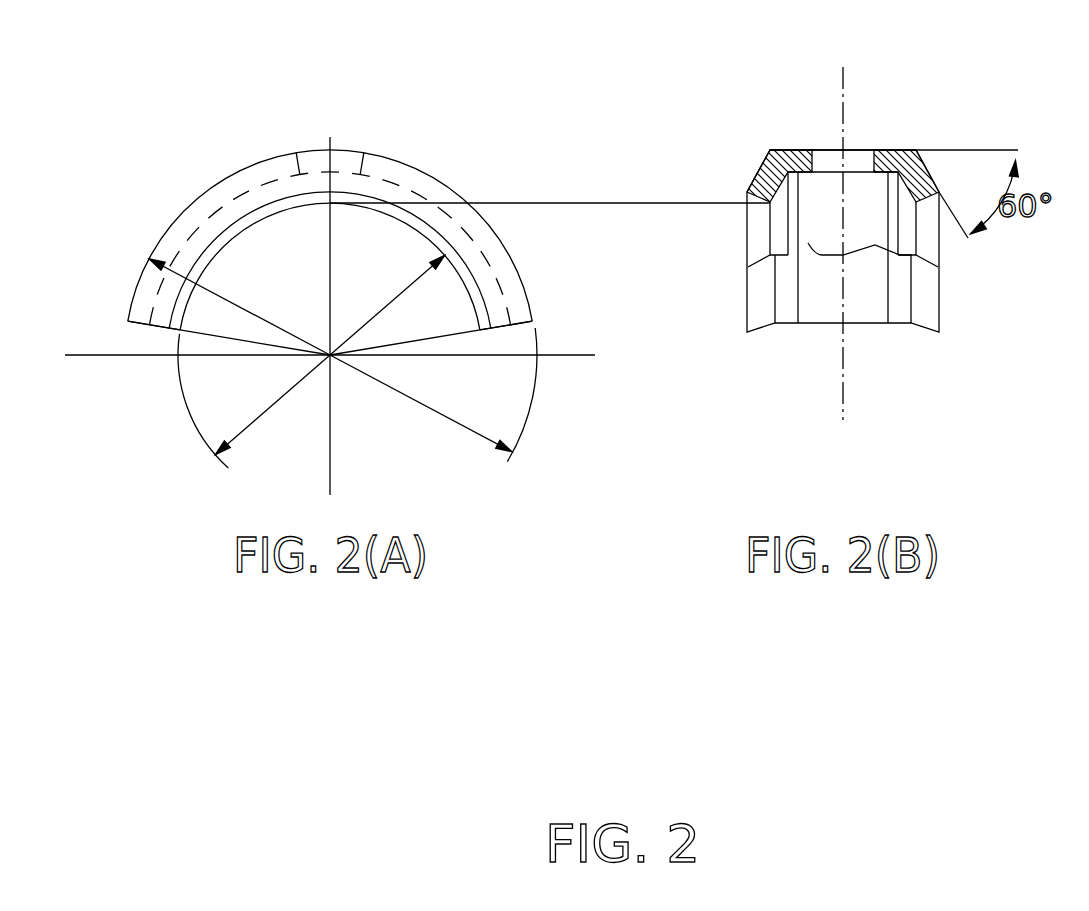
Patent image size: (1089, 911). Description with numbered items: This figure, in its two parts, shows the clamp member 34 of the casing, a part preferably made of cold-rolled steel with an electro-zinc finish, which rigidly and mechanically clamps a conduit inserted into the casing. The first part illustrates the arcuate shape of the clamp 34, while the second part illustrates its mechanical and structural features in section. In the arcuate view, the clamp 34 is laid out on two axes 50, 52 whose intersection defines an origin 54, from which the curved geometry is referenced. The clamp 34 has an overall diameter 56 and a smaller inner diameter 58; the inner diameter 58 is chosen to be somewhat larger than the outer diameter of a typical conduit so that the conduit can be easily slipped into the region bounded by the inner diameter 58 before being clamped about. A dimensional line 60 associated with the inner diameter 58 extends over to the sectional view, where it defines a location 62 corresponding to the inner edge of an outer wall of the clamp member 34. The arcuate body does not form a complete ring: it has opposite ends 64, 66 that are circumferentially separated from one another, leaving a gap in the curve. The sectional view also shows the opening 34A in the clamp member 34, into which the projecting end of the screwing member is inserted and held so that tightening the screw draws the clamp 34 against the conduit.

In FIG. 2B, the clamp member 34 is at (777, 68).
In FIG. 2A, the opening 34A is at (348, 151).
In FIG. 2B, the opening 34A is at (857, 152).
In FIG. 2A, the axis 50 is at (332, 294).
In FIG. 2B, the axis 50 is at (845, 92).
In FIG. 2A, the axis 52 is at (570, 355).
In FIG. 2A, the origin 54 is at (333, 360).
In FIG. 2A, the overall diameter 56 is at (433, 395).
In FIG. 2A, the inner diameter 58 is at (254, 401).
In FIG. 2B, the dimensional line 60 is at (687, 203).
In FIG. 2B, the location 62 is at (758, 196).
In FIG. 2A, the end 64 is at (130, 302).
In FIG. 2A, the end 66 is at (533, 311).